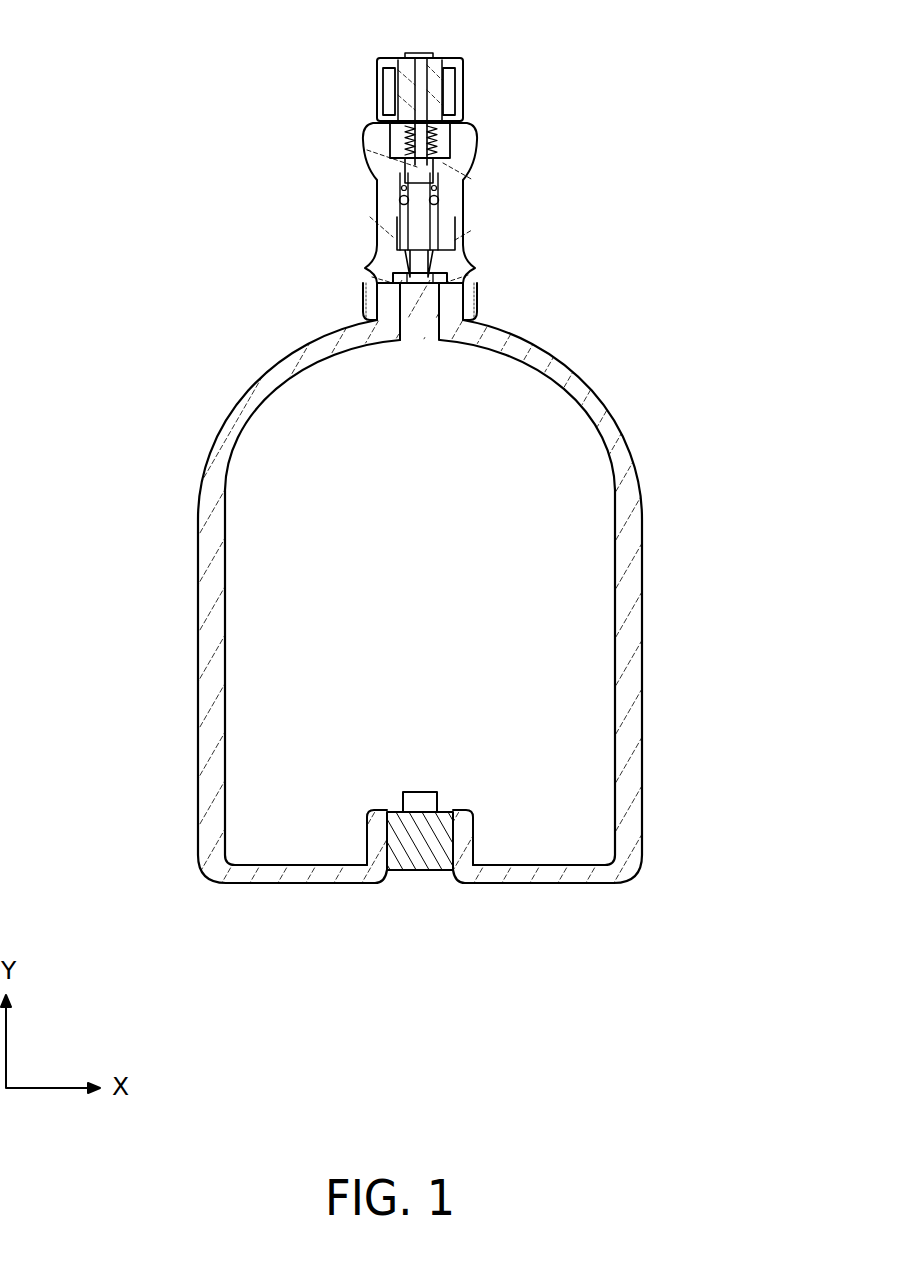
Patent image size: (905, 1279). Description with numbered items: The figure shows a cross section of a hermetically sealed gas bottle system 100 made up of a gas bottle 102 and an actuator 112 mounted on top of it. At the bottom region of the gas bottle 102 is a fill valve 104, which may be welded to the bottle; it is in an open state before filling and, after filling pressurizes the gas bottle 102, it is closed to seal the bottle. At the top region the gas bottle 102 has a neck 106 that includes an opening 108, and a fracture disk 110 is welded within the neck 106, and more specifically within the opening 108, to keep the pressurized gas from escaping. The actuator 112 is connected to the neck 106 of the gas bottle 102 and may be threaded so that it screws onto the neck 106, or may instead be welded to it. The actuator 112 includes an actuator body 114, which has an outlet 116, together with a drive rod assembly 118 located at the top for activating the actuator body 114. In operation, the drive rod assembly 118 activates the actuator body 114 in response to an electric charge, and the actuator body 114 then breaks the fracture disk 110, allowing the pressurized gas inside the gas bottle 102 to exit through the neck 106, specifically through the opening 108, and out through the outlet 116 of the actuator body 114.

The hermetically sealed gas bottle system 100 is at (116, 106).
The gas bottle 102 is at (200, 560).
The fill valve 104 is at (445, 830).
The neck 106 is at (375, 305).
The opening 108 is at (418, 350).
The fracture disk 110 is at (447, 280).
The actuator 112 is at (281, 200).
The actuator body 114 is at (470, 163).
The outlet 116 is at (458, 208).
The drive rod assembly 118 is at (458, 100).